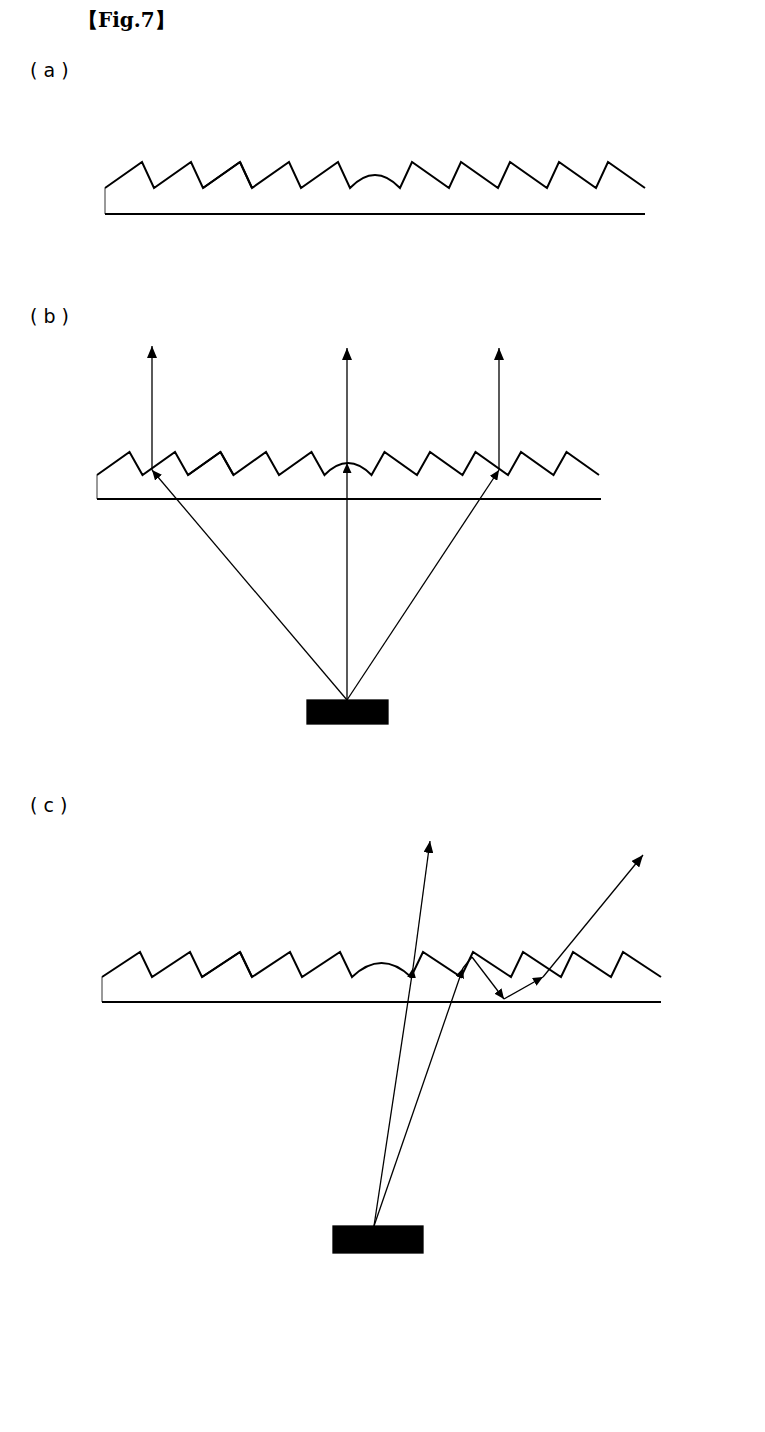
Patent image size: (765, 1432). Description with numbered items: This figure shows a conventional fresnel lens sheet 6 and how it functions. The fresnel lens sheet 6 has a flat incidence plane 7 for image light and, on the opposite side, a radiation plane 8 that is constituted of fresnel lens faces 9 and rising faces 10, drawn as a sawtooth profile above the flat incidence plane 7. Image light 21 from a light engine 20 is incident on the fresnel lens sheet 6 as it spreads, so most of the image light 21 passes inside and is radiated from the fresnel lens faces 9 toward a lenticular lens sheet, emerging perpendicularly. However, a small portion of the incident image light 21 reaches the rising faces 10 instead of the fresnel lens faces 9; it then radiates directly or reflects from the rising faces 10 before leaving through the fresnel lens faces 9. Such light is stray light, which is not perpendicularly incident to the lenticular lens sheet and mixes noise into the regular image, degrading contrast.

The fresnel lens sheet 6 is at (118, 198).
The incidence plane 7 is at (128, 224).
The radiation plane 8 is at (104, 174).
The fresnel lens faces 9 is at (228, 176).
The rising faces 10 is at (250, 173).
The light engine 20 is at (306, 711).
The image light 21 is at (403, 622).